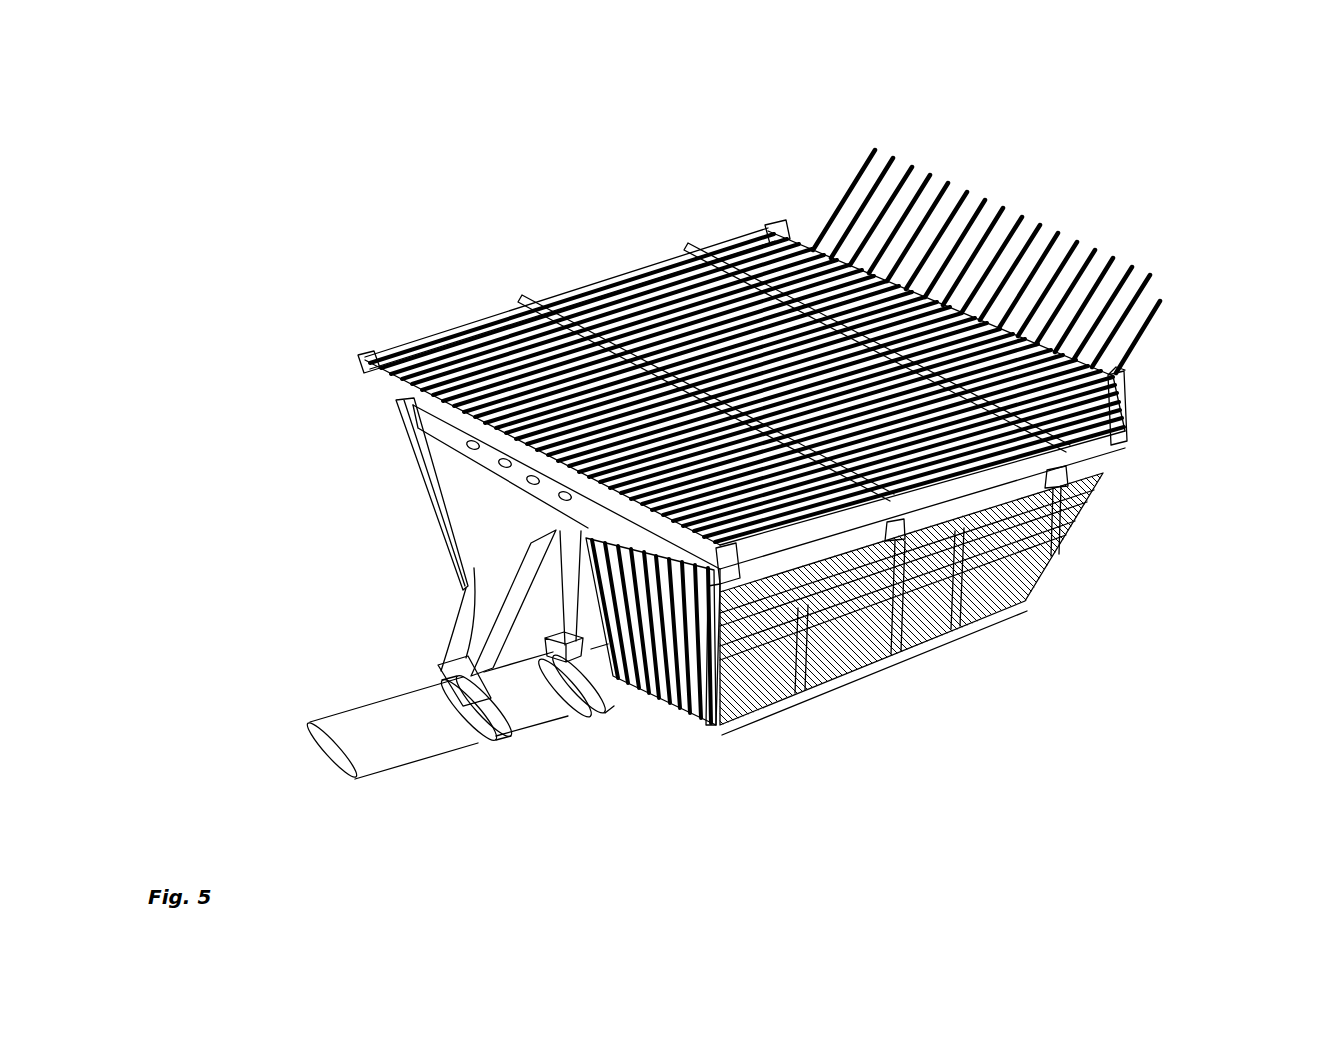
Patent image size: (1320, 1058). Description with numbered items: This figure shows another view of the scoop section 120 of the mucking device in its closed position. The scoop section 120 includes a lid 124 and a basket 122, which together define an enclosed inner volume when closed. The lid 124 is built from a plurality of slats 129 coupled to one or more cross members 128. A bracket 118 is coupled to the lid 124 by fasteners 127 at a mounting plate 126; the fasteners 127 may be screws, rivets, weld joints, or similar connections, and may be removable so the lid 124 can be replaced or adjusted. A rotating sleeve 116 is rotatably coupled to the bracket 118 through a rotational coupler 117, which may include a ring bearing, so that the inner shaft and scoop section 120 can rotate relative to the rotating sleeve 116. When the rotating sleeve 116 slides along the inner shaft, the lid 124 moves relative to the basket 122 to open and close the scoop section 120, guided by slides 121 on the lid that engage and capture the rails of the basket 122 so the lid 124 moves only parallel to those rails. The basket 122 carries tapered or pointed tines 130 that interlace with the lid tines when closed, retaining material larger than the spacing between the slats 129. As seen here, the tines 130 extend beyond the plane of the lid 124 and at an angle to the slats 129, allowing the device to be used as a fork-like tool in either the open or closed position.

The rotating sleeve 116 is at (328, 722).
The rotational coupler 117 is at (470, 733).
The bracket 118 is at (488, 533).
The scoop section 120 is at (945, 133).
The slides 121 is at (1077, 437).
The basket 122 is at (710, 720).
The lid 124 is at (694, 547).
The mounting plate 126 is at (460, 418).
The fasteners 127 is at (557, 488).
The cross members 128 is at (705, 445).
The slats 129 is at (475, 373).
The tines 130 is at (1107, 247).